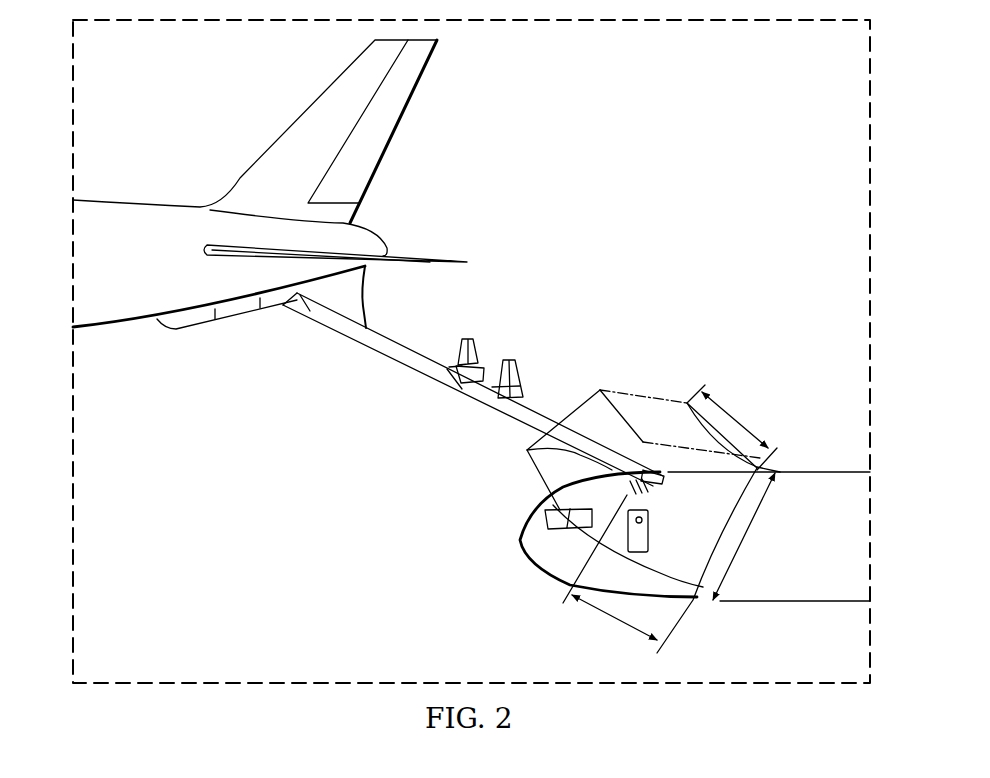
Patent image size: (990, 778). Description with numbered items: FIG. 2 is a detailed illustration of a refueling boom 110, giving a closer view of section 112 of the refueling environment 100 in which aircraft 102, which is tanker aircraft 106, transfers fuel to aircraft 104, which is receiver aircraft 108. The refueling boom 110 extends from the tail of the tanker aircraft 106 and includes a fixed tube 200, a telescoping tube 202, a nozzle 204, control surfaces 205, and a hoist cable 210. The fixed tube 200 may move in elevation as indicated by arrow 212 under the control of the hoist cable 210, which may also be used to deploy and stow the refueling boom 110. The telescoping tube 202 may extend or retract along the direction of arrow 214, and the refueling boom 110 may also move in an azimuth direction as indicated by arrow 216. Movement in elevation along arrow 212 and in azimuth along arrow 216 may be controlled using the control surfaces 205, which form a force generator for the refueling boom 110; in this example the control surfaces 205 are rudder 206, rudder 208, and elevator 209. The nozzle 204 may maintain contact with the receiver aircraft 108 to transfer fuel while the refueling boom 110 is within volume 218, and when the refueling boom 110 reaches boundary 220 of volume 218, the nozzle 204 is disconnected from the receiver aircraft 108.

The refueling environment 100 is at (931, 106).
The aircraft 102 is at (270, 184).
The aircraft 104 is at (769, 572).
The tanker aircraft 106 is at (177, 206).
The receiver aircraft 108 is at (742, 603).
The refueling boom 110 is at (364, 404).
The section 112 is at (68, 360).
The fixed tube 200 is at (342, 340).
The telescoping tube 202 is at (572, 467).
The nozzle 204 is at (662, 477).
The control surfaces 205 is at (469, 410).
The rudder 206 is at (467, 337).
The rudder 208 is at (520, 372).
The elevator 209 is at (483, 380).
The hoist cable 210 is at (366, 304).
The arrow 212 is at (745, 538).
The arrow 214 is at (612, 620).
The arrow 216 is at (743, 422).
The volume 218 is at (786, 423).
The boundary 220 is at (633, 395).